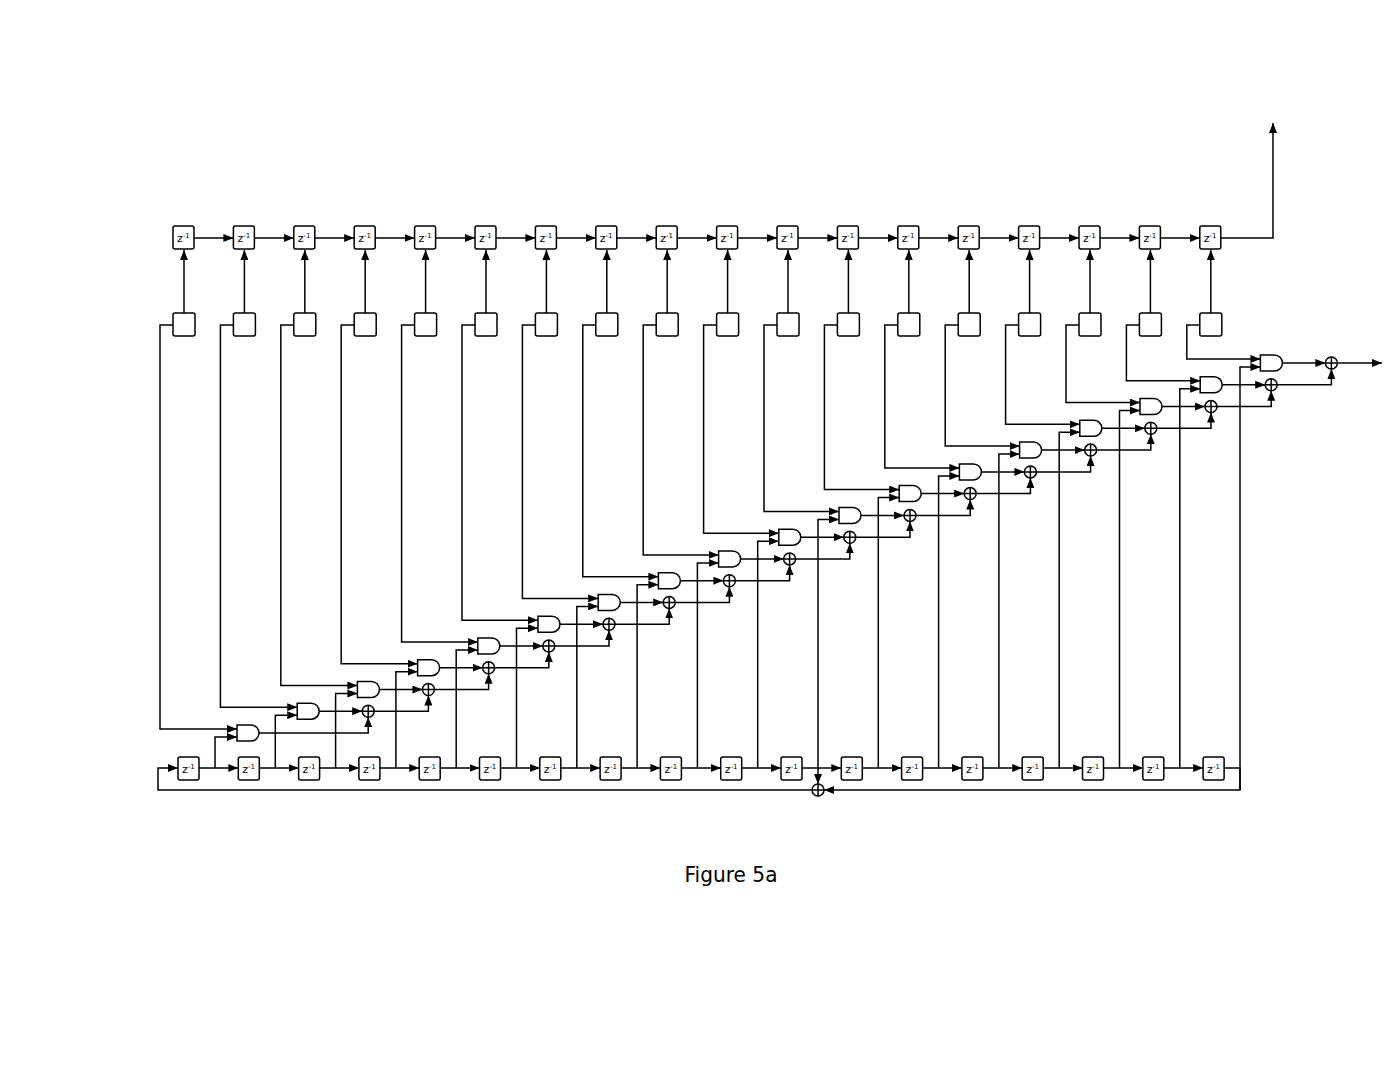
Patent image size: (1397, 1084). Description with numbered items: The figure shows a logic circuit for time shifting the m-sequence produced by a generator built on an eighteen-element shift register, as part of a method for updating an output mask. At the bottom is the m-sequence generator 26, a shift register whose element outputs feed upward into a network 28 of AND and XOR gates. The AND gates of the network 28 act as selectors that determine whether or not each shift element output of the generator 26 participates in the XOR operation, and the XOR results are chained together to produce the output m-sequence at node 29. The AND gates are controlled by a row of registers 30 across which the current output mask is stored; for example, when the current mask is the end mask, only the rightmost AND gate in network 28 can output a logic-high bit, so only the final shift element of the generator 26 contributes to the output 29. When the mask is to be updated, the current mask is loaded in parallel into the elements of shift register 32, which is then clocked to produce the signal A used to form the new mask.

The m-sequence generator 26 is at (97, 760).
The network of AND and XOR gates 28 is at (95, 740).
The output node 29 is at (1378, 373).
The row of registers 30 is at (95, 295).
The shift register 32 is at (95, 215).